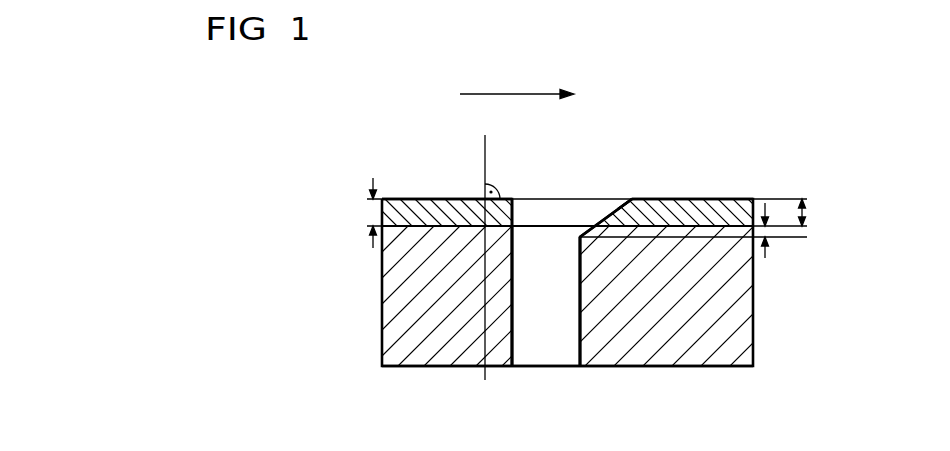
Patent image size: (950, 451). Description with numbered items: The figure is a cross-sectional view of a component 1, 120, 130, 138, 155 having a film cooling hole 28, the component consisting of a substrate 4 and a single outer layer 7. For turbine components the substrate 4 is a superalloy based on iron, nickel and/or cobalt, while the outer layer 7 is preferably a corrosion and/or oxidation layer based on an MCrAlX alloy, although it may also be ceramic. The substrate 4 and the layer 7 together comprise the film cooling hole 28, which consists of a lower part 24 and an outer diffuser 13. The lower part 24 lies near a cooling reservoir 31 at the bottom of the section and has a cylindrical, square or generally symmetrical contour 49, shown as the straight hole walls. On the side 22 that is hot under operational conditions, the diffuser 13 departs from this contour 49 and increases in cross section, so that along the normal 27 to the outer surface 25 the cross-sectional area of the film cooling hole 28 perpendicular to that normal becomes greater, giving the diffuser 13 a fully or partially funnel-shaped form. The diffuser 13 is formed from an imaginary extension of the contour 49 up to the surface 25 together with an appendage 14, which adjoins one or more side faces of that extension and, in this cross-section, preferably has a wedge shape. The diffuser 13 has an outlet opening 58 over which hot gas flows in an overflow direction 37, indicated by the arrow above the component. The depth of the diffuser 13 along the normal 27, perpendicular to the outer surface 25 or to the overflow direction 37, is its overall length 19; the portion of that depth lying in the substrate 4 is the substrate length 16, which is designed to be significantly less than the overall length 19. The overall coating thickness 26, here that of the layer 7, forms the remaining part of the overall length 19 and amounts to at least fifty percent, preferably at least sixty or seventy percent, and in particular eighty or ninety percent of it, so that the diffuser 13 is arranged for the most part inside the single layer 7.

The component 1 is at (415, 301).
The component 120 is at (415, 301).
The component 130 is at (415, 301).
The component 138 is at (415, 301).
The component 155 is at (340, 347).
The substrate 4 is at (393, 307).
The outer layer 7 is at (720, 215).
The diffuser 13 is at (538, 212).
The appendage 14 is at (628, 196).
The substrate length 16 is at (768, 234).
The overall length 19 is at (806, 221).
The side 22 is at (568, 142).
The lower part 24 is at (558, 354).
The outer surface 25 is at (407, 198).
The coating thickness 26 is at (367, 213).
The normal 27 is at (483, 157).
The film cooling hole 28 is at (558, 279).
The cooling reservoir 31 is at (566, 411).
The overflow direction 37 is at (498, 94).
The contour 49 is at (581, 313).
The outlet opening 58 is at (592, 199).